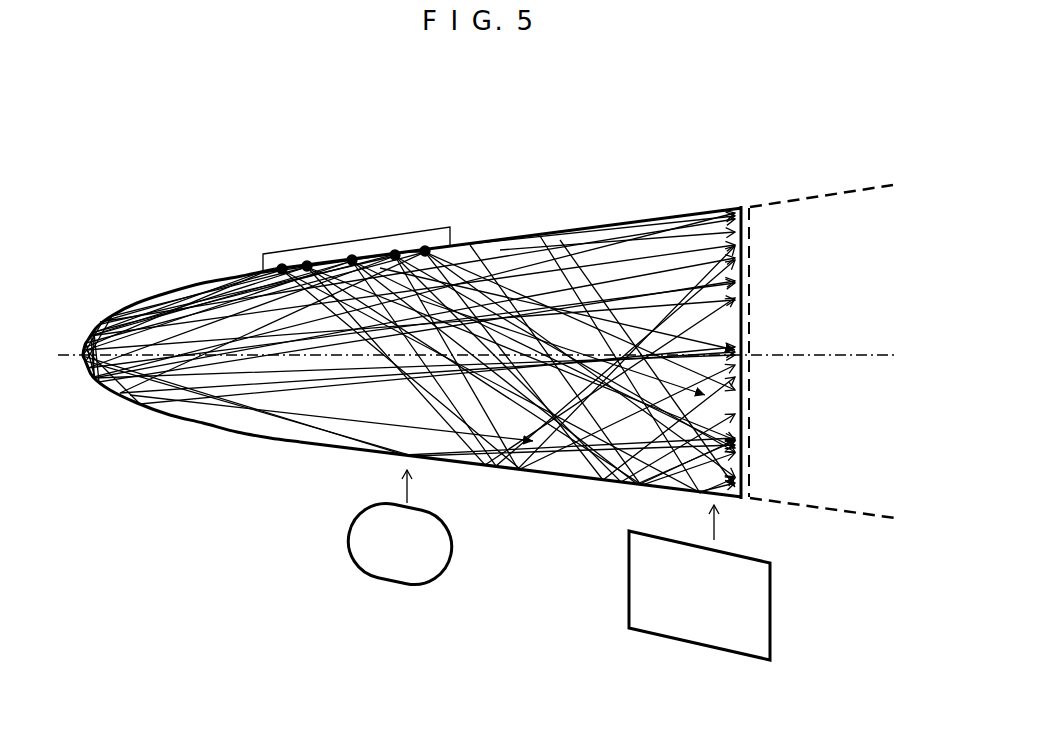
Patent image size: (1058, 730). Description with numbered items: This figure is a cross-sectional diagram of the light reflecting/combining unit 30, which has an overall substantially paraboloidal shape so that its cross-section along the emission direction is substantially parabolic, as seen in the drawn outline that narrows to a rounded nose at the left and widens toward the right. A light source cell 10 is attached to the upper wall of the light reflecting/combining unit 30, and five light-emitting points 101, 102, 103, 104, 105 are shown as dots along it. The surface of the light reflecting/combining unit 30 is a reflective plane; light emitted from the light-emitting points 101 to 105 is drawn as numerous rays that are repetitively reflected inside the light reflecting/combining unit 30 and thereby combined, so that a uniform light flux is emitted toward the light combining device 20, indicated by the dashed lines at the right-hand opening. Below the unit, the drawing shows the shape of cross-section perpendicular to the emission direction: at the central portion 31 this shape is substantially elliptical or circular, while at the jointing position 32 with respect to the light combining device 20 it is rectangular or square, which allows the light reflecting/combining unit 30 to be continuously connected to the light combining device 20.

The light source cell 10 is at (330, 189).
The light combining device 20 is at (788, 202).
The light reflecting/combining unit 30 is at (578, 240).
The central portion 31 is at (452, 545).
The jointing position 32 is at (773, 603).
The light-emitting point 101 is at (274, 270).
The light-emitting point 102 is at (300, 266).
The light-emitting point 103 is at (340, 259).
The light-emitting point 104 is at (394, 252).
The light-emitting point 105 is at (430, 249).